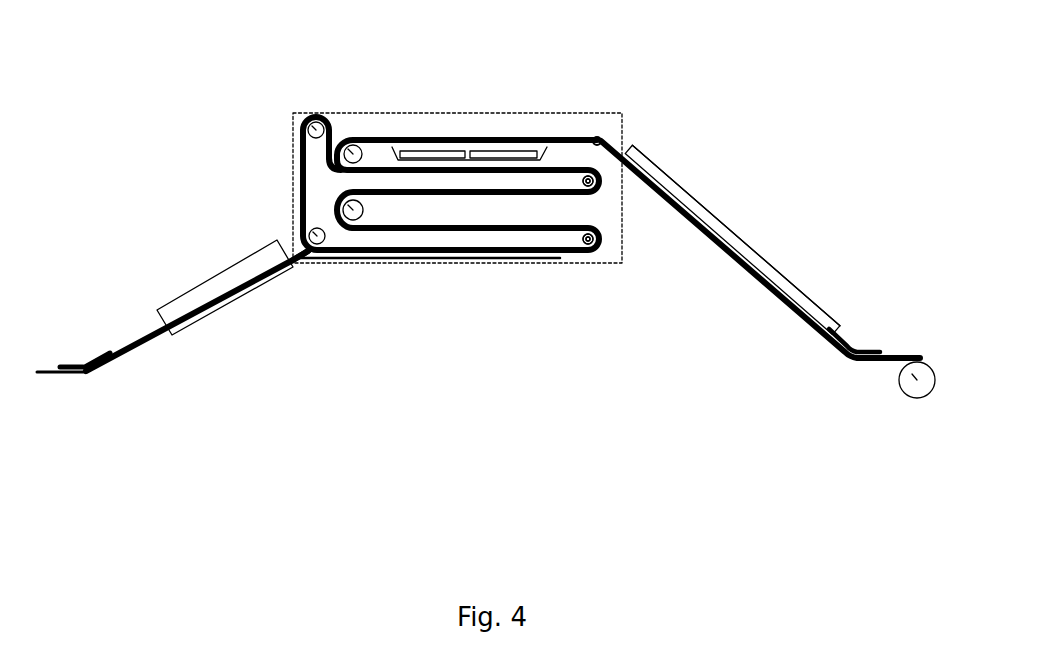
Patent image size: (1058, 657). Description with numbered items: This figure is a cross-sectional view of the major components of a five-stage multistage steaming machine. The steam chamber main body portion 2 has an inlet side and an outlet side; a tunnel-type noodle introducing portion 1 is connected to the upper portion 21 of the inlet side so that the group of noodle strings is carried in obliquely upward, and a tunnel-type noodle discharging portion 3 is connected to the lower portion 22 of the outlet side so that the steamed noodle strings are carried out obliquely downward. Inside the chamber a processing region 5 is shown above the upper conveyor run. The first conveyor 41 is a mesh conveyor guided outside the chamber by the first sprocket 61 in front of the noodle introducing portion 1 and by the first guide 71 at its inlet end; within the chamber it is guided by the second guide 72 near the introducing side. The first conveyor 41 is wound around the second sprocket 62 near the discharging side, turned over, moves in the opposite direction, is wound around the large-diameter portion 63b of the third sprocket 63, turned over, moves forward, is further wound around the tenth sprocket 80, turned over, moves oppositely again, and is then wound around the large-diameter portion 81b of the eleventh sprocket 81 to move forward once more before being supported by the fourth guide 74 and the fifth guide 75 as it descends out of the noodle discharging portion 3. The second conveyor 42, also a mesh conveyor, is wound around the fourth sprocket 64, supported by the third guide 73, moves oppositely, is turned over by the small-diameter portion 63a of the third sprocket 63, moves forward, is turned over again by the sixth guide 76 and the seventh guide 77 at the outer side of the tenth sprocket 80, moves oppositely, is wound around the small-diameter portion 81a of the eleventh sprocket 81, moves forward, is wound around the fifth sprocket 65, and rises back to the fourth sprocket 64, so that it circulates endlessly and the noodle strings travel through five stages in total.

The noodle introducing portion 1 is at (768, 264).
The steam chamber main body portion 2 is at (455, 112).
The noodle discharging portion 3 is at (213, 277).
The processing unit 5 is at (510, 152).
The upper portion 21 is at (632, 148).
The lower portion 22 is at (286, 252).
The first conveyor 41 is at (707, 222).
The second conveyor 42 is at (333, 193).
The first sprocket 61 is at (912, 372).
The second sprocket 62 is at (358, 146).
The third sprocket 63 is at (728, 318).
The small-diameter portion 63a is at (597, 195).
The large-diameter portion 63b is at (600, 245).
The fourth sprocket 64 is at (318, 127).
The fifth sprocket 65 is at (320, 247).
The first guide 71 is at (840, 340).
The second guide 72 is at (598, 136).
The third guide 73 is at (338, 130).
The fourth guide 74 is at (300, 265).
The fifth guide 75 is at (90, 362).
The sixth guide 76 is at (300, 160).
The seventh guide 77 is at (358, 218).
The tenth sprocket 80 is at (360, 212).
The eleventh sprocket 81 is at (500, 345).
The small-diameter portion 81a is at (585, 198).
The large-diameter portion 81b is at (590, 248).